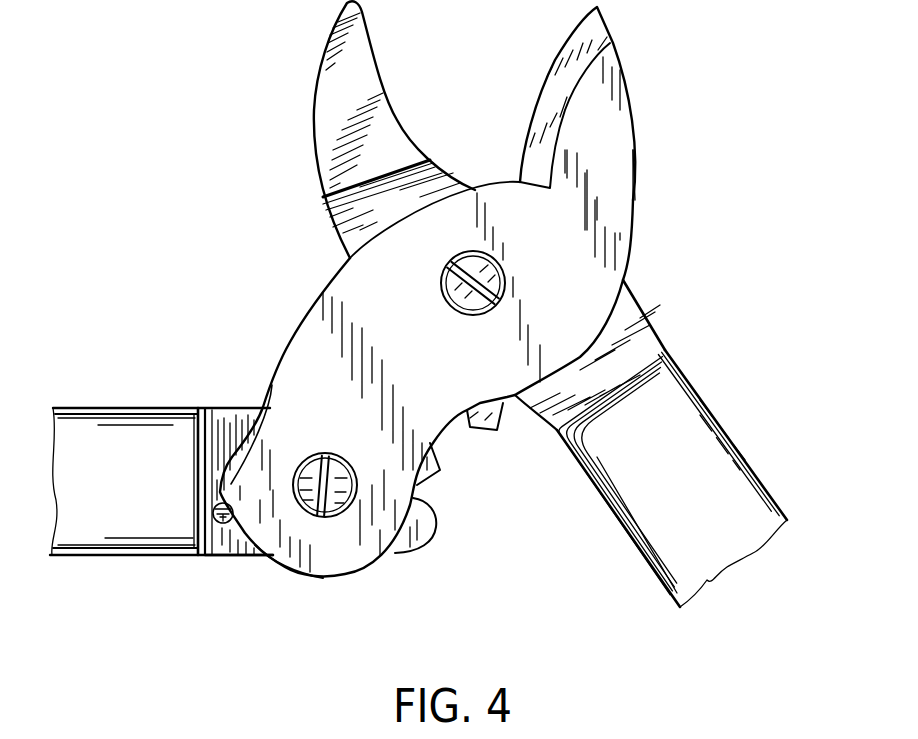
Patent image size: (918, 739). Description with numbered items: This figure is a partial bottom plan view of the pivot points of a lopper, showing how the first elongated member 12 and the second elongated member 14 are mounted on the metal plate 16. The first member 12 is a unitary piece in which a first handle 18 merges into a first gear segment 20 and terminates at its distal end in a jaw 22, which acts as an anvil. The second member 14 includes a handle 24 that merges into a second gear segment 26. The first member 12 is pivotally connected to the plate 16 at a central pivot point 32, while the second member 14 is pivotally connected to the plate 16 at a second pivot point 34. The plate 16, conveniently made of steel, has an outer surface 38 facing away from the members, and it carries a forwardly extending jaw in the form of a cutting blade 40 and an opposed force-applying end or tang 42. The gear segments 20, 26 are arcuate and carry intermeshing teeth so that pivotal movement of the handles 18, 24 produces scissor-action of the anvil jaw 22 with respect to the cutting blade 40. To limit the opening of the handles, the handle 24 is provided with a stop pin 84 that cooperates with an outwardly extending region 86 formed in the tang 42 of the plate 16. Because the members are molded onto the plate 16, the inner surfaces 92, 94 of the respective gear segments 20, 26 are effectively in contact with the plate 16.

The first elongated member 12 is at (787, 495).
The second elongated member 14 is at (84, 396).
The metal plate 16 is at (644, 74).
The first handle 18 is at (737, 530).
The first gear segment 20 is at (345, 257).
The jaw 22 is at (322, 40).
The handle 24 is at (100, 523).
The second gear segment 26 is at (247, 550).
The central pivot point 32 is at (522, 262).
The second pivot point 34 is at (338, 528).
The outer surface 38 is at (613, 168).
The cutting blade 40 is at (590, 24).
The tang 42 is at (293, 547).
The stop pin 84 is at (217, 527).
The outwardly extending region 86 is at (272, 385).
The inner surface of first gear segment 92 is at (628, 323).
The inner surface of second gear segment 94 is at (220, 420).